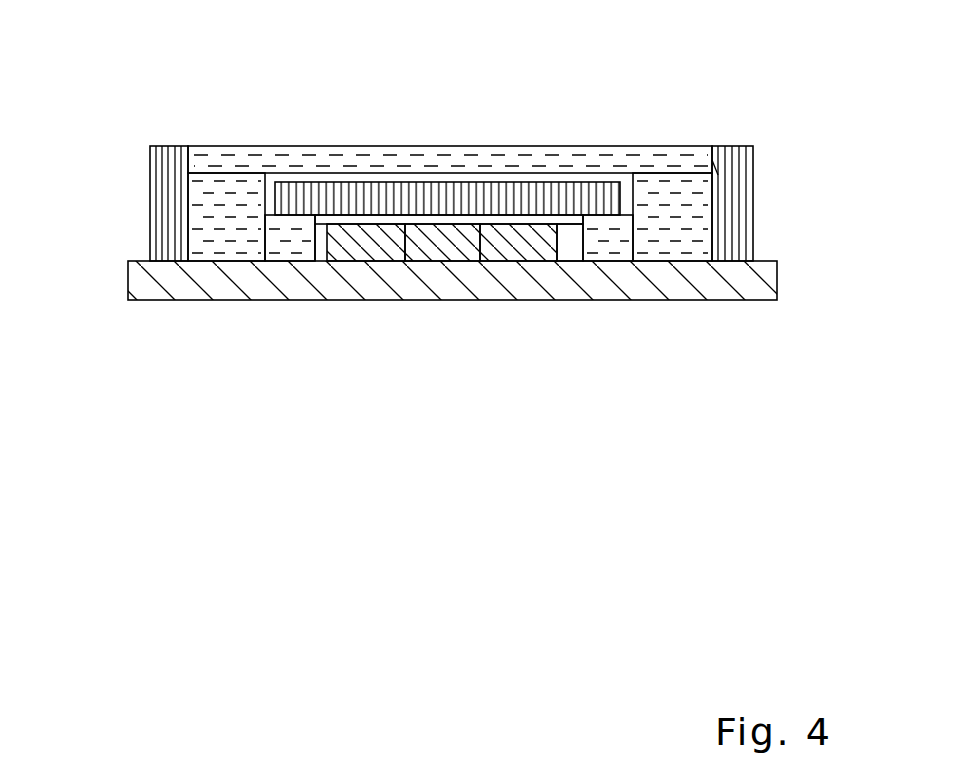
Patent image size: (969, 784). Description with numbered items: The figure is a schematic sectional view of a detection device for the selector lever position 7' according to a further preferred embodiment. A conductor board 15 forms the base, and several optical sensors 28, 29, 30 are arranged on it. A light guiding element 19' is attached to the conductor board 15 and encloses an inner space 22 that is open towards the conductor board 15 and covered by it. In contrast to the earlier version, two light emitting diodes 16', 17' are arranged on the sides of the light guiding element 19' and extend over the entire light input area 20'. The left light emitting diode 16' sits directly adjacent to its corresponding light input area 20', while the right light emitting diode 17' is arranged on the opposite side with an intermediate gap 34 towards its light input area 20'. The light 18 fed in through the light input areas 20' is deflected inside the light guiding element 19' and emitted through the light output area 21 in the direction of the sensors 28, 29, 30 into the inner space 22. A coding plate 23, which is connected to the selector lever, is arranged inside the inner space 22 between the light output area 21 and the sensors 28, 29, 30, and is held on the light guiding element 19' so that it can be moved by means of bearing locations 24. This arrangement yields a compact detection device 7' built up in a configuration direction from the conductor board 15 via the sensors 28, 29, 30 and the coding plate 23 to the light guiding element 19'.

The detection device for the selector lever position 7' is at (443, 228).
The conductor board 15 is at (300, 262).
The light emitting diode 16' is at (155, 135).
The light emitting diode 17' is at (740, 135).
The light 18 is at (368, 232).
The light guiding element 19' is at (450, 91).
The light input area 20' is at (450, 135).
The light output area 21 is at (338, 181).
The inner space 22 is at (573, 252).
The coding plate 23 is at (585, 195).
The bearing locations 24 is at (282, 252).
The optical sensor 28 is at (368, 252).
The optical sensor 29 is at (440, 252).
The optical sensor 30 is at (523, 252).
The intermediate gap 34 is at (715, 172).